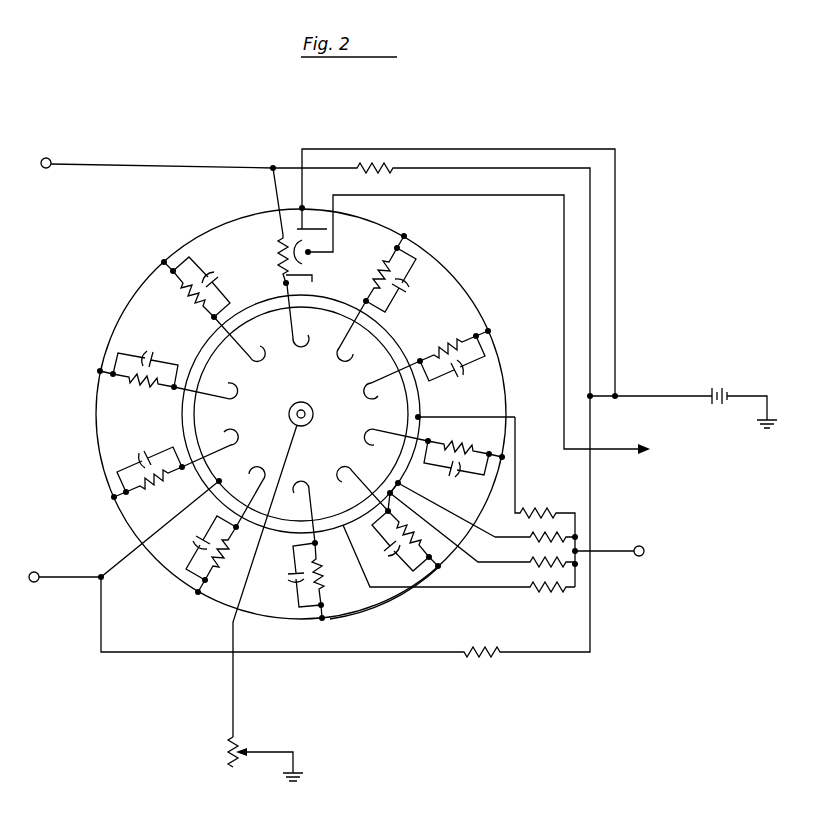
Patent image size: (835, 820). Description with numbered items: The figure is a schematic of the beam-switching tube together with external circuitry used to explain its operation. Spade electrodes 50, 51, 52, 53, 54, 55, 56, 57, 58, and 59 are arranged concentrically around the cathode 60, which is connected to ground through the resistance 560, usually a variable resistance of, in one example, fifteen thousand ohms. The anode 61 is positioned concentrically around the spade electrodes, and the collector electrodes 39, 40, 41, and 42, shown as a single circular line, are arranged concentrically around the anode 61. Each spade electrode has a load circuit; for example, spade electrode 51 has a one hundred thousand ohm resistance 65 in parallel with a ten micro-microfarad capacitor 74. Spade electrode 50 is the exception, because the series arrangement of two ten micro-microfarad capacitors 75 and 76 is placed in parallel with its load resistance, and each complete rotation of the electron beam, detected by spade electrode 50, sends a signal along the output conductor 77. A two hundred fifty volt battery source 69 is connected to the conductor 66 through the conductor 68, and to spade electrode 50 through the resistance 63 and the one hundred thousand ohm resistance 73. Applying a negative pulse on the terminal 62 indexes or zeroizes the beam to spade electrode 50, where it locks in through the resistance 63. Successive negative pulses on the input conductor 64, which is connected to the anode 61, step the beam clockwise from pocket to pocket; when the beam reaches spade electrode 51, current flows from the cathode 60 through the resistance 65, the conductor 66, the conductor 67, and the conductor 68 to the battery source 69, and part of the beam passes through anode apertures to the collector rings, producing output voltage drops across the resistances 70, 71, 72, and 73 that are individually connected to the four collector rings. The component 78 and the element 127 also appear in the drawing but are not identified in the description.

The collector electrode 39 is at (455, 380).
The collector electrode 40 is at (422, 410).
The collector electrode 41 is at (430, 431).
The collector electrode 42 is at (434, 474).
The spade electrode 50 is at (302, 328).
The spade electrode 51 is at (345, 345).
The spade electrode 52 is at (373, 402).
The spade electrode 53 is at (372, 443).
The spade electrode 54 is at (353, 480).
The spade electrode 55 is at (300, 501).
The spade electrode 56 is at (256, 484).
The spade electrode 57 is at (223, 442).
The spade electrode 58 is at (219, 393).
The spade electrode 59 is at (250, 348).
The cathode 60 is at (314, 416).
The anode 61 is at (445, 504).
The terminal 62 is at (50, 160).
The resistance 63 is at (281, 257).
The input conductor 64 is at (34, 583).
The resistance 65 is at (382, 262).
The conductor 66 is at (468, 291).
The conductor 67 is at (302, 206).
The conductor 68 is at (434, 150).
The battery source 69 is at (729, 391).
The resistance 70 is at (535, 510).
The resistance 71 is at (530, 537).
The resistance 72 is at (528, 562).
The resistance 73 is at (528, 587).
The capacitor 74 is at (409, 296).
The capacitor 75 is at (327, 231).
The capacitor 76 is at (312, 276).
The output conductor 77 is at (458, 195).
The resistor 78 is at (393, 168).
The outer ring 127 is at (395, 594).
The resistance 560 is at (240, 740).